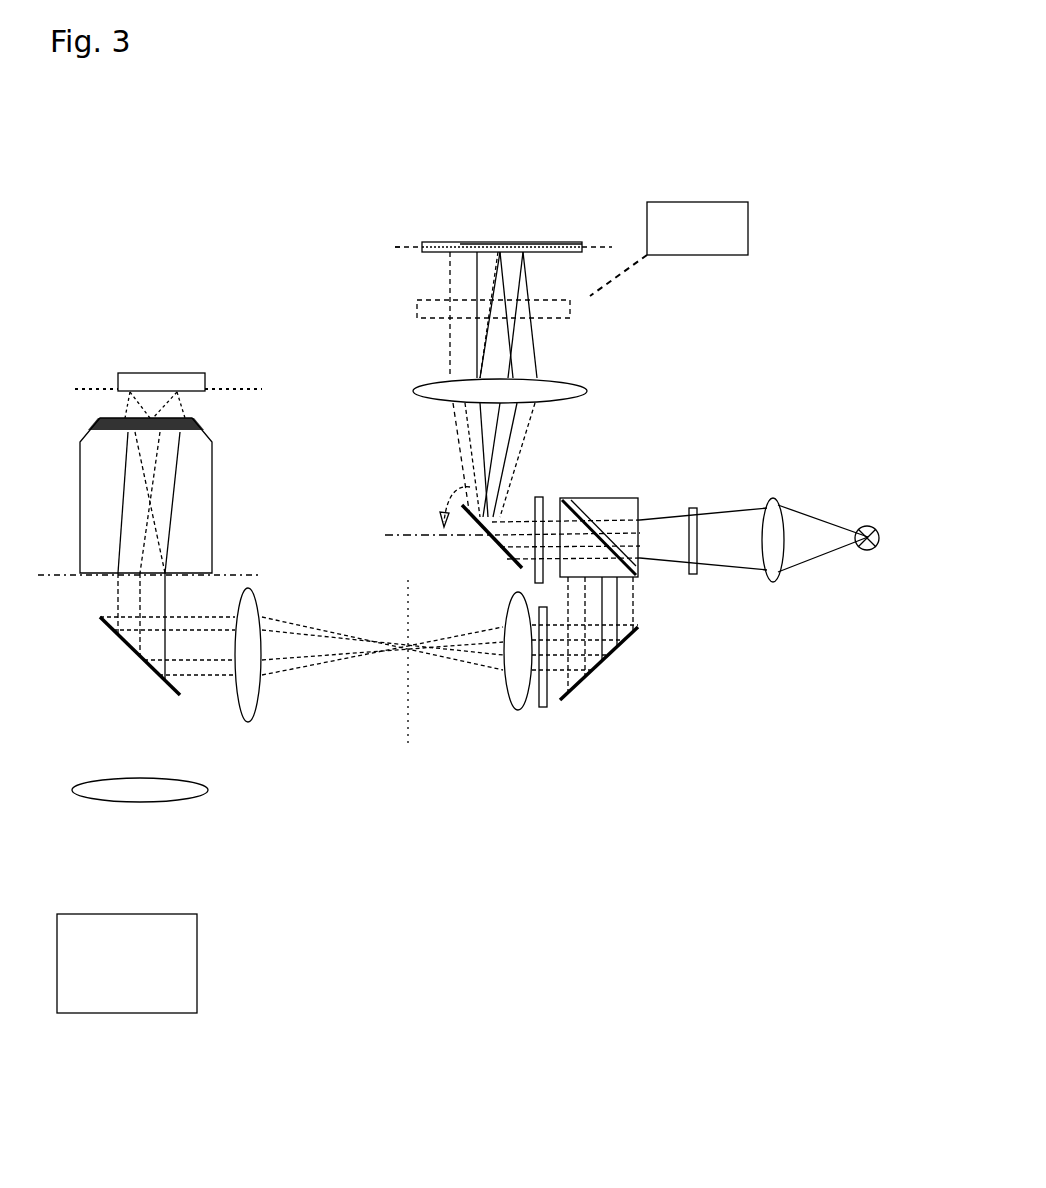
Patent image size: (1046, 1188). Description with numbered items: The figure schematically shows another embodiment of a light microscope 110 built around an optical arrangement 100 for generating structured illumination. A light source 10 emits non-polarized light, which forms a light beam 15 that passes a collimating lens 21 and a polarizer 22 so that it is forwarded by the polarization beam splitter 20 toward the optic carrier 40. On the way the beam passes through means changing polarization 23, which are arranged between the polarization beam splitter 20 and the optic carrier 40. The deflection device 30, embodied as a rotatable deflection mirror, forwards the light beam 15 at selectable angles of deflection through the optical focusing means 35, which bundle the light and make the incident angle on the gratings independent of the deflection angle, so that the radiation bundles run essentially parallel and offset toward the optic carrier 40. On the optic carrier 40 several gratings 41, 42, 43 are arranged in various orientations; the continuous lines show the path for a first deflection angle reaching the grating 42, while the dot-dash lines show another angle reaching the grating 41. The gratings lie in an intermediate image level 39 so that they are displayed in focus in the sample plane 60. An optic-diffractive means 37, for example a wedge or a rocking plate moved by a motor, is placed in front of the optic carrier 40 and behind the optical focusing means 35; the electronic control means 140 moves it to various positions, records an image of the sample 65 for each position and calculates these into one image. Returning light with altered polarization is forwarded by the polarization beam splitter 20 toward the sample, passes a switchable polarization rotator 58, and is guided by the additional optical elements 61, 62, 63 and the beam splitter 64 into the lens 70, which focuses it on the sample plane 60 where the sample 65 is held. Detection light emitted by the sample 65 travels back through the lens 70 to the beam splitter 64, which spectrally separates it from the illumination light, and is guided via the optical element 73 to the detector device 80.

The light source 10 is at (865, 526).
The light beam 15 is at (738, 548).
The polarization beam splitter 20 is at (598, 498).
The collimating lens 21 is at (773, 498).
The polarizer 22 is at (693, 508).
The means changing polarization 23 is at (541, 497).
The deflection device 30 is at (492, 548).
The optical focusing means 35 is at (588, 391).
The optic-diffractive means 37 is at (570, 303).
The intermediate image level 39 is at (395, 250).
The optic carrier 40 is at (422, 204).
The grating 41 is at (450, 242).
The grating 42 is at (503, 242).
The grating 43 is at (548, 242).
The polarization rotator 58 is at (545, 707).
The sample plane 60 is at (75, 388).
The optical element 61 is at (628, 660).
The optical element 62 is at (510, 706).
The optical element 63 is at (258, 715).
The beam splitter 64 is at (130, 650).
The sample 65 is at (160, 373).
The lens 70 is at (113, 511).
The optical element 73 is at (196, 797).
The detector device 80 is at (125, 973).
The optical arrangement 100 is at (514, 805).
The light microscope 110 is at (565, 930).
The electronic control means 140 is at (719, 250).